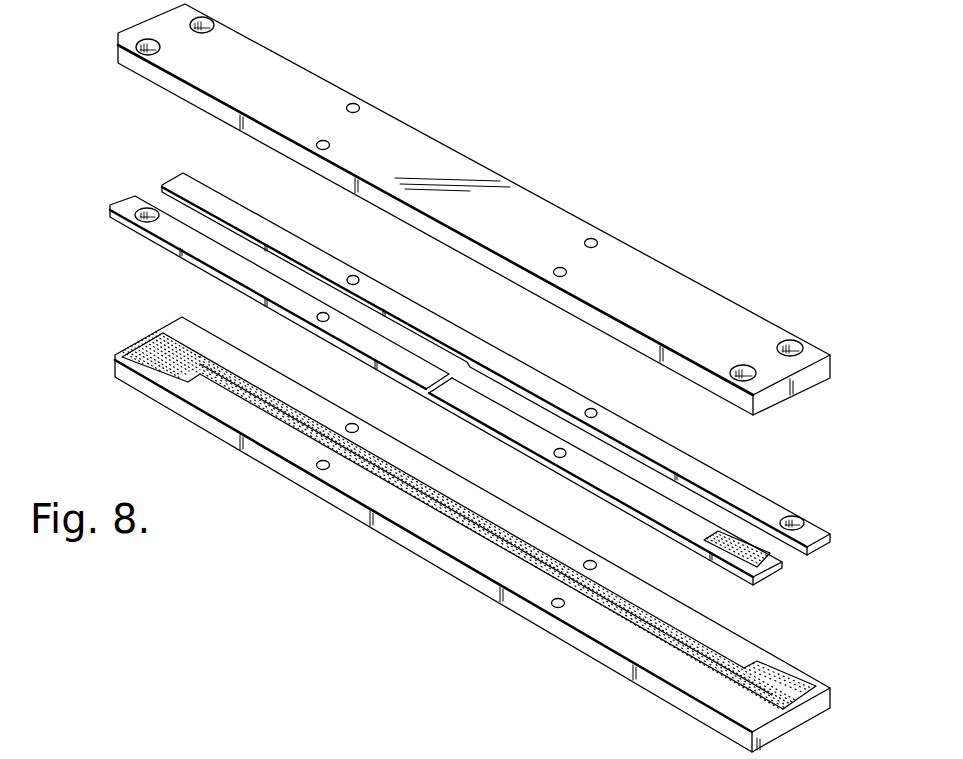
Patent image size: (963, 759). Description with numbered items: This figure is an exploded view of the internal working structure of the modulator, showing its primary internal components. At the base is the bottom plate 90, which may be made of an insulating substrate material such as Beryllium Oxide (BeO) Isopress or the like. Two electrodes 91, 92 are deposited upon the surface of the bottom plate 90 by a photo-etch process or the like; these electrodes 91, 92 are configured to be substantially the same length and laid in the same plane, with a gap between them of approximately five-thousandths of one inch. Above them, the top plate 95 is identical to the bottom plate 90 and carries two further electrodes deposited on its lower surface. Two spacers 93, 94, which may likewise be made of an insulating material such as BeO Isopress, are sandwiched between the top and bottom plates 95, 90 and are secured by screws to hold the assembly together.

The bottom plate 90 is at (478, 553).
The electrode 91 is at (787, 680).
The electrode 92 is at (712, 670).
The spacer 93 is at (760, 502).
The spacer 94 is at (683, 520).
The top plate 95 is at (718, 303).